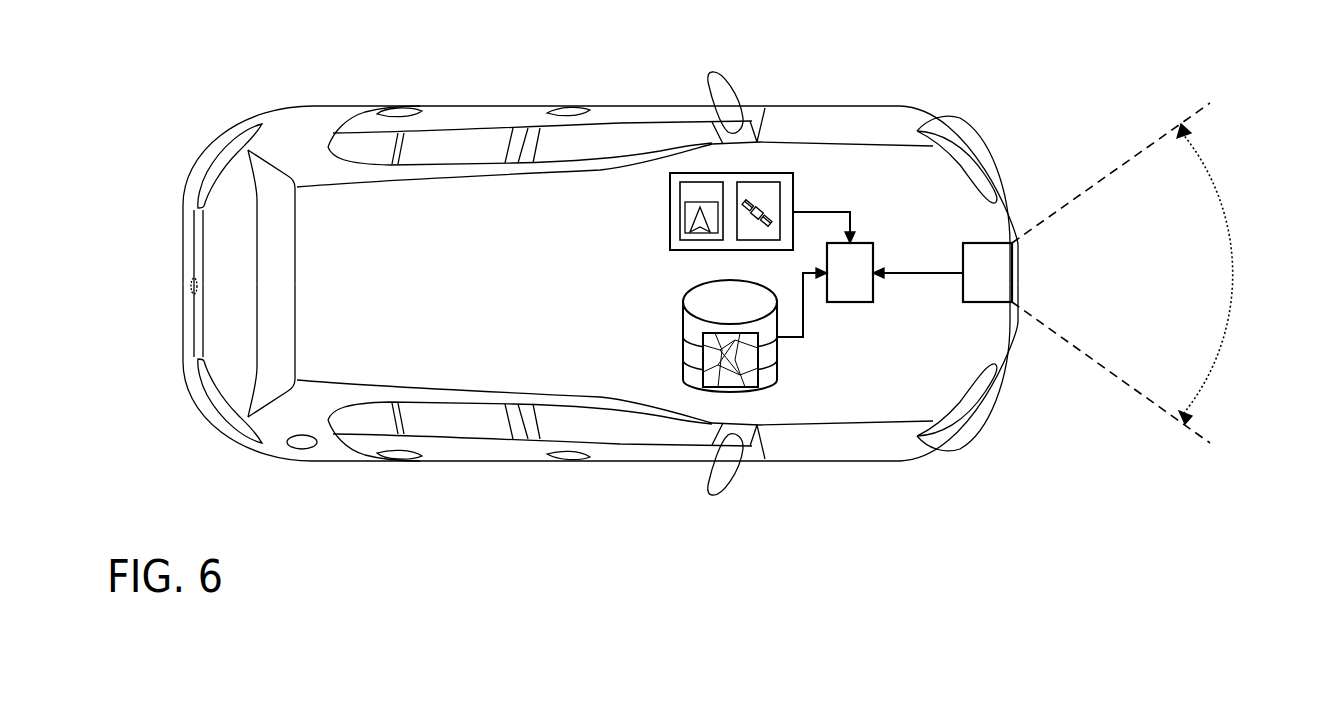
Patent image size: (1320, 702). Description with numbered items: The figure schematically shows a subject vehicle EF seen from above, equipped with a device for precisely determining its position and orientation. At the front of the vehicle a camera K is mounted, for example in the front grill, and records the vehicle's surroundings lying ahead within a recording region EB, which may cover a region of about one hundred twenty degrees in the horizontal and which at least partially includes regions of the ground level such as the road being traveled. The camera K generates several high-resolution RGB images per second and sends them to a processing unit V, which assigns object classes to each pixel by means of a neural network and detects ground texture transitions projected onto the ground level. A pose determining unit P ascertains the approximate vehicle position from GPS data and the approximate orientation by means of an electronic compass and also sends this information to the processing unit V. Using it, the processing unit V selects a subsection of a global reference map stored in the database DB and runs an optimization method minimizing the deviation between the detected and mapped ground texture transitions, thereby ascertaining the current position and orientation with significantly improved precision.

The subject vehicle EF is at (600, 460).
The pose determining unit P is at (705, 172).
The database DB is at (690, 383).
The processing unit V is at (845, 302).
The camera K is at (987, 302).
The recording region EB is at (1213, 178).